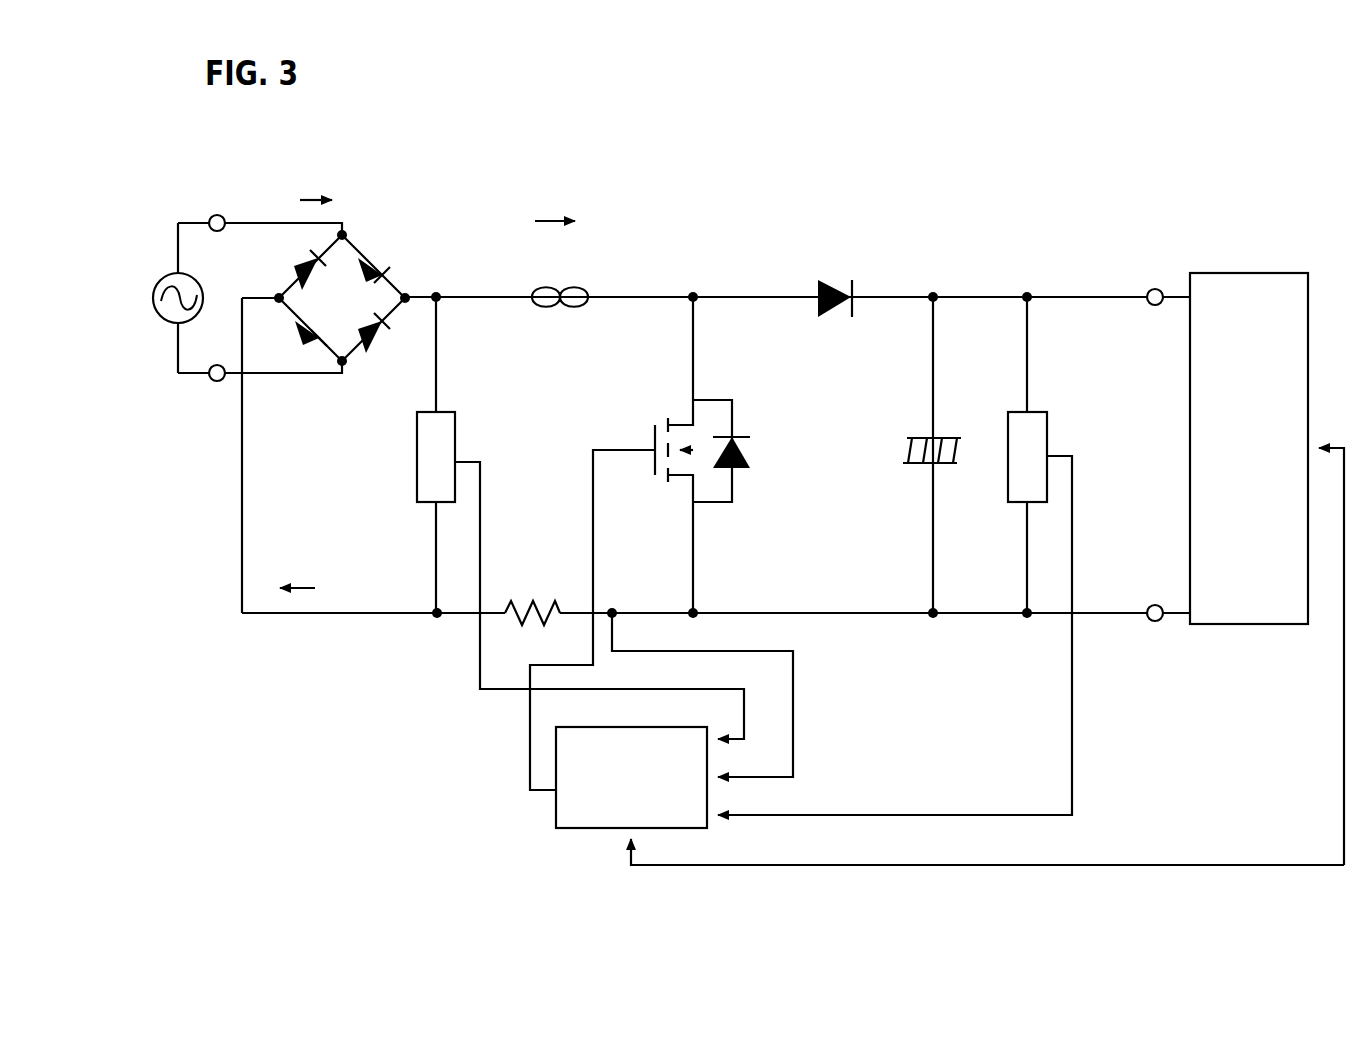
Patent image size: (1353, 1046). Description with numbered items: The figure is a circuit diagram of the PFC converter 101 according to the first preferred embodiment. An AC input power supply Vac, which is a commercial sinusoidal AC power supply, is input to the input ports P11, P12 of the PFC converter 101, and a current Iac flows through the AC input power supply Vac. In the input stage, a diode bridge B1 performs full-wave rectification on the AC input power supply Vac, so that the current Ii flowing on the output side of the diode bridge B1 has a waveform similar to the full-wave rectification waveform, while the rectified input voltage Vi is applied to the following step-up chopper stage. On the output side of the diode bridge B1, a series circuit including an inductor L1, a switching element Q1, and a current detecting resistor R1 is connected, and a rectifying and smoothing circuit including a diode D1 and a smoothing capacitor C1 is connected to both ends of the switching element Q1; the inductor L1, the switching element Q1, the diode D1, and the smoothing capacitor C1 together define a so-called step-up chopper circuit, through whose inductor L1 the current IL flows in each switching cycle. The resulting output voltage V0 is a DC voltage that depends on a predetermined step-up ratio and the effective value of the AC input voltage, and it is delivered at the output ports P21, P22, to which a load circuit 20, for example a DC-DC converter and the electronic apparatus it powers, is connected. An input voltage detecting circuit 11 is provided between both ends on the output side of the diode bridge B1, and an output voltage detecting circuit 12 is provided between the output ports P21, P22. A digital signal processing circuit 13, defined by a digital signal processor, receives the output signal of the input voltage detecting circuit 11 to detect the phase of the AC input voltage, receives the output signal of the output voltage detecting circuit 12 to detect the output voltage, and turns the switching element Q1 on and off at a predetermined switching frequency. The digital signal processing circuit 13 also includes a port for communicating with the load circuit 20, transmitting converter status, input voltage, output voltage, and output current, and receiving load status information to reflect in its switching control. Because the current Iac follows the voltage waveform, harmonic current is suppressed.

The PFC converter 101 is at (921, 169).
The input voltage detecting circuit 11 is at (455, 411).
The output voltage detecting circuit 12 is at (1048, 411).
The digital signal processing circuit 13 is at (653, 727).
The load circuit 20 is at (1226, 272).
The input port P11 is at (218, 213).
The input port P12 is at (216, 383).
The output port P21 is at (1153, 288).
The output port P22 is at (1153, 622).
The diode bridge B1 is at (400, 242).
The inductor L1 is at (560, 282).
The switching element Q1 is at (640, 543).
The diode D1 is at (835, 283).
The smoothing capacitor C1 is at (936, 455).
The current detecting resistor R1 is at (532, 599).
The AC input power supply Vac is at (166, 288).
The input voltage Vi is at (481, 283).
The output voltage V0 is at (1033, 283).
The current flowing through the AC input power supply Iac is at (294, 202).
The current flowing through the inductor IL is at (537, 222).
The current flowing on the output side of the diode bridge Ii is at (308, 590).